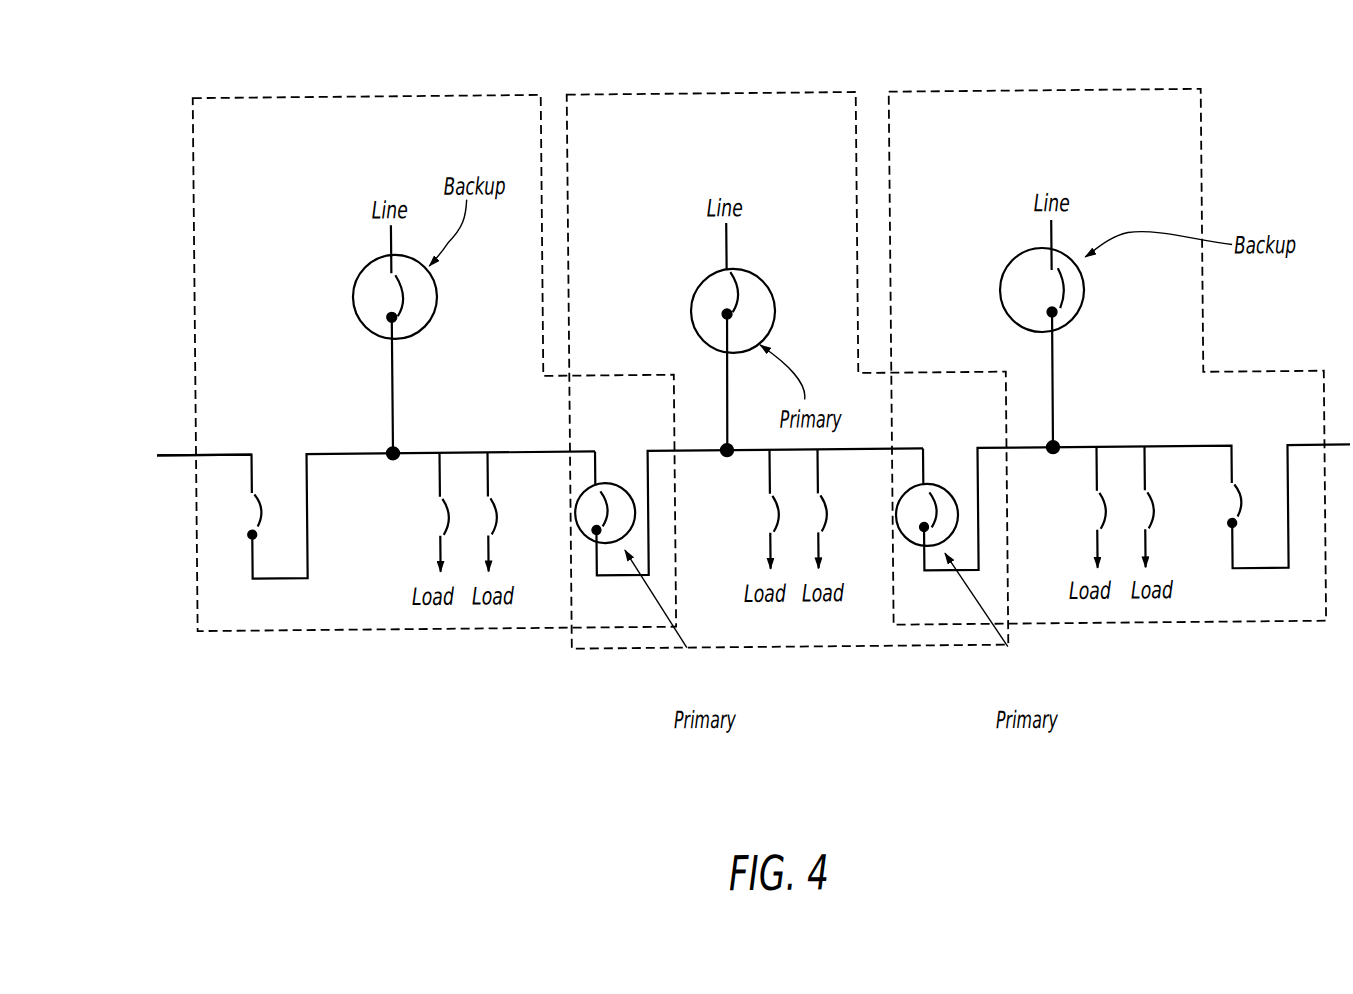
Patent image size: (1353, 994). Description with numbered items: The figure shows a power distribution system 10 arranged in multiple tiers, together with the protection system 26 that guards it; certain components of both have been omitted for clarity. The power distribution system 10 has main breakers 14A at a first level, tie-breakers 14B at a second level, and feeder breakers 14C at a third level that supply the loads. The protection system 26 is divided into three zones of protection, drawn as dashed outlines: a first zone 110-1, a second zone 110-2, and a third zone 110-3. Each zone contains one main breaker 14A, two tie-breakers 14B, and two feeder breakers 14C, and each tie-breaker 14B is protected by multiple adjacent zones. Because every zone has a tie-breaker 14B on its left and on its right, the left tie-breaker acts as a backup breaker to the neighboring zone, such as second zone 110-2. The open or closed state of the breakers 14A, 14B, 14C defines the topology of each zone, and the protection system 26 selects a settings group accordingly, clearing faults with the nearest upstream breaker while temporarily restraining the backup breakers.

The power distribution system 10 is at (125, 658).
The protection system 26 is at (157, 92).
The first zone 110-1 is at (382, 93).
The second zone 110-2 is at (781, 93).
The third zone 110-3 is at (1054, 91).
The main breaker 14A is at (422, 322).
The tie-breaker 14B is at (267, 463).
The feeder breaker 14C is at (422, 520).